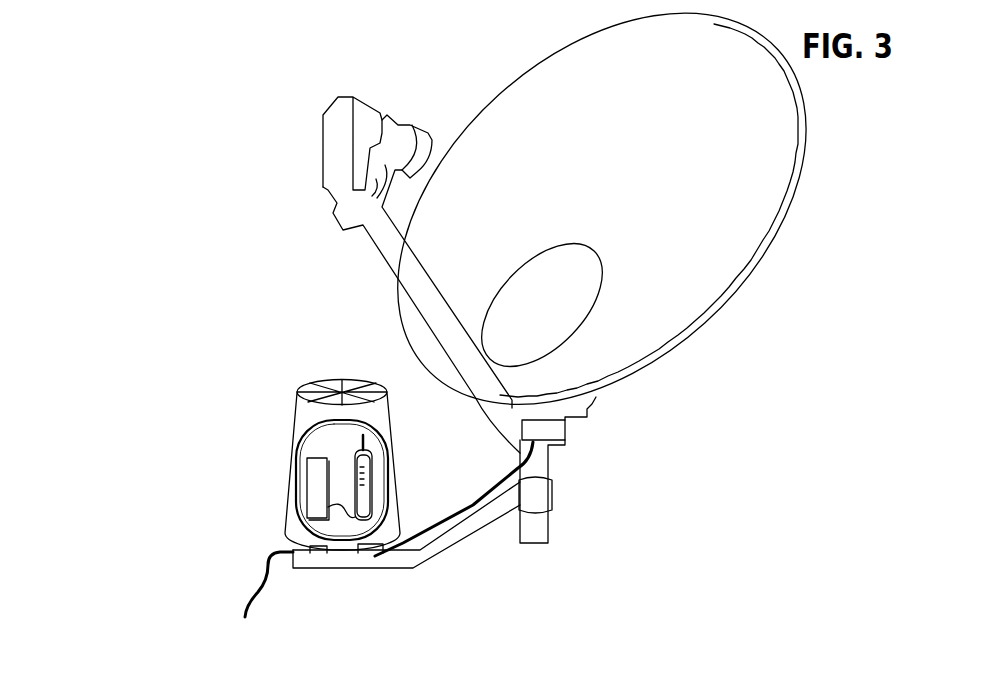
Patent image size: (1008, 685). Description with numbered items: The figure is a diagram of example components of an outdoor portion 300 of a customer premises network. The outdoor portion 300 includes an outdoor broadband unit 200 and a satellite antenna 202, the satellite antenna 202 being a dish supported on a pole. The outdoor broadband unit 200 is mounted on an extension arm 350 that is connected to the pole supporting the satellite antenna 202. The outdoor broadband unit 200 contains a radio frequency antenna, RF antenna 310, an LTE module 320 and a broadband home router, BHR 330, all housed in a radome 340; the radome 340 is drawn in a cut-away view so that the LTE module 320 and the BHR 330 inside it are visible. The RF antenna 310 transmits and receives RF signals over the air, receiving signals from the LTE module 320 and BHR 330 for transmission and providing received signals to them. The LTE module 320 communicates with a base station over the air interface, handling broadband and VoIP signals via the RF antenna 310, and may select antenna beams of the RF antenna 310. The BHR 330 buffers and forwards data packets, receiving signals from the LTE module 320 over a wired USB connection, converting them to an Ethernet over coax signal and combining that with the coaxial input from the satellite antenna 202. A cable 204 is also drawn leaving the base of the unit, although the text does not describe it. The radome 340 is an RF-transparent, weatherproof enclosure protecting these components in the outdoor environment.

The outdoor portion 300 is at (100, 39).
The outdoor broadband unit 200 is at (260, 334).
The satellite antenna 202 is at (688, 340).
The cable 204 is at (262, 579).
The RF antenna 310 is at (362, 380).
The LTE module 320 is at (305, 488).
The broadband home router (BHR) 330 is at (373, 463).
The radome 340 is at (297, 412).
The extension arm 350 is at (466, 537).